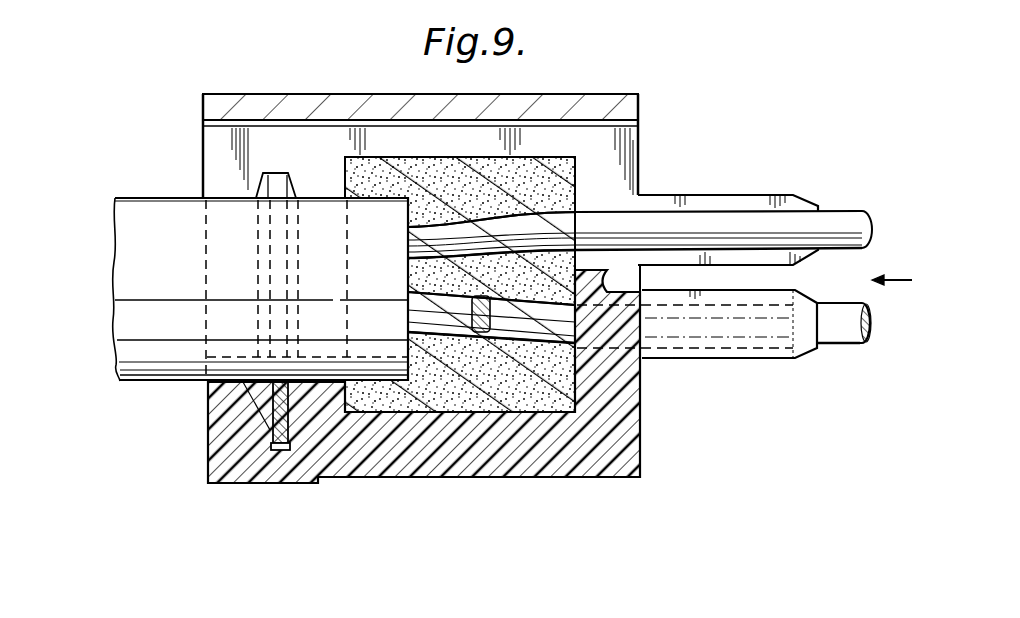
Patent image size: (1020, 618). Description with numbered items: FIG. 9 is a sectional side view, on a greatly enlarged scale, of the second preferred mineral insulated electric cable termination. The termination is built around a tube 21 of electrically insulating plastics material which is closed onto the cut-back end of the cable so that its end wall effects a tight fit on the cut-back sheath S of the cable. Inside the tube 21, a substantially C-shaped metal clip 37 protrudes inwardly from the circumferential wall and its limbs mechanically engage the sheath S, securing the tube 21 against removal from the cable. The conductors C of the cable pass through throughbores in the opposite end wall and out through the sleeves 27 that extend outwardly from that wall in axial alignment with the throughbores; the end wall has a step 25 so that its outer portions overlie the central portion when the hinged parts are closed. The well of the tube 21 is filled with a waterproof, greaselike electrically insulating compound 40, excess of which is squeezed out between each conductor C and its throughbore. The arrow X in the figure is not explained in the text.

The tube 21 is at (322, 93).
The step 25 is at (602, 288).
The sleeve 27 is at (715, 200).
The metal clip 37 is at (277, 397).
The insulating compound 40 is at (555, 400).
The cut-back sheath S is at (127, 255).
The conductor C is at (835, 212).
The direction arrow X is at (892, 267).